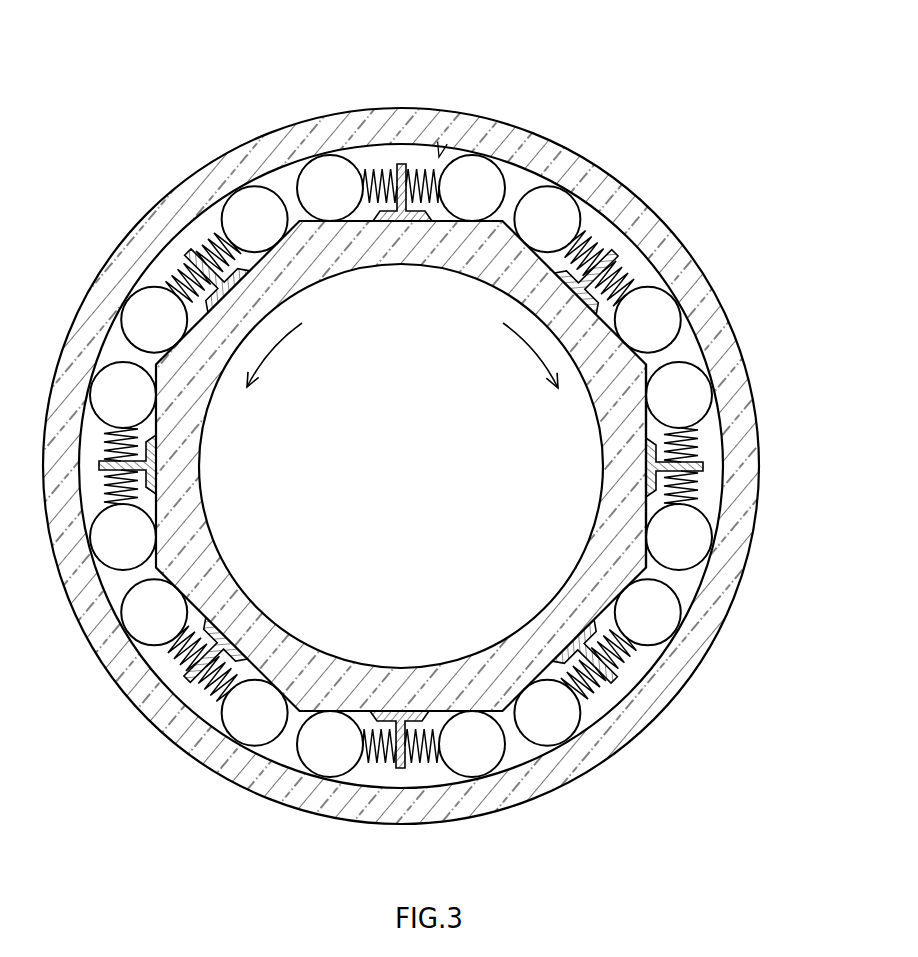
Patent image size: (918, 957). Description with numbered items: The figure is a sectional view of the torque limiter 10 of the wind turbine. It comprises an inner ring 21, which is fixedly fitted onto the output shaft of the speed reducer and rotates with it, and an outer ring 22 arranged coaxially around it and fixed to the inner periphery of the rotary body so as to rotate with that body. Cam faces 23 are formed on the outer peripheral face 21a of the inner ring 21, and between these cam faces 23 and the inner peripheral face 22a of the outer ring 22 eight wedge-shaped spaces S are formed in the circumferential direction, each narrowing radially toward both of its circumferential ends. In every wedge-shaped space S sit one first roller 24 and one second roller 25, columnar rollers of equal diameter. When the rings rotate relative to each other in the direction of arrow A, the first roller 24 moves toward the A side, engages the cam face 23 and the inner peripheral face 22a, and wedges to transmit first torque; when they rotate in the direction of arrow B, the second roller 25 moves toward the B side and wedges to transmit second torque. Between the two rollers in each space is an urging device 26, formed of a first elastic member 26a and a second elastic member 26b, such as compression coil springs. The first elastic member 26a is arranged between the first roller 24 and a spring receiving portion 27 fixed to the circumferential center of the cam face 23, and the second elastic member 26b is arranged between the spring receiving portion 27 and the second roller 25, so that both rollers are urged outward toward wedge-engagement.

The torque limiter 10 is at (431, 417).
The inner ring 21 is at (409, 466).
The outer peripheral face of the inner ring 21a is at (647, 374).
The outer ring 22 is at (401, 440).
The inner peripheral face of the outer ring 22a is at (524, 165).
The cam face 23 is at (557, 256).
The first roller 24 is at (327, 163).
The second roller 25 is at (477, 158).
The urging device 26 is at (385, 106).
The first elastic member 26a is at (383, 166).
The second elastic member 26b is at (419, 168).
The spring receiving portion 27 is at (400, 214).
The wedge-shaped space S is at (439, 157).
The arrow A is at (273, 347).
The arrow B is at (523, 347).